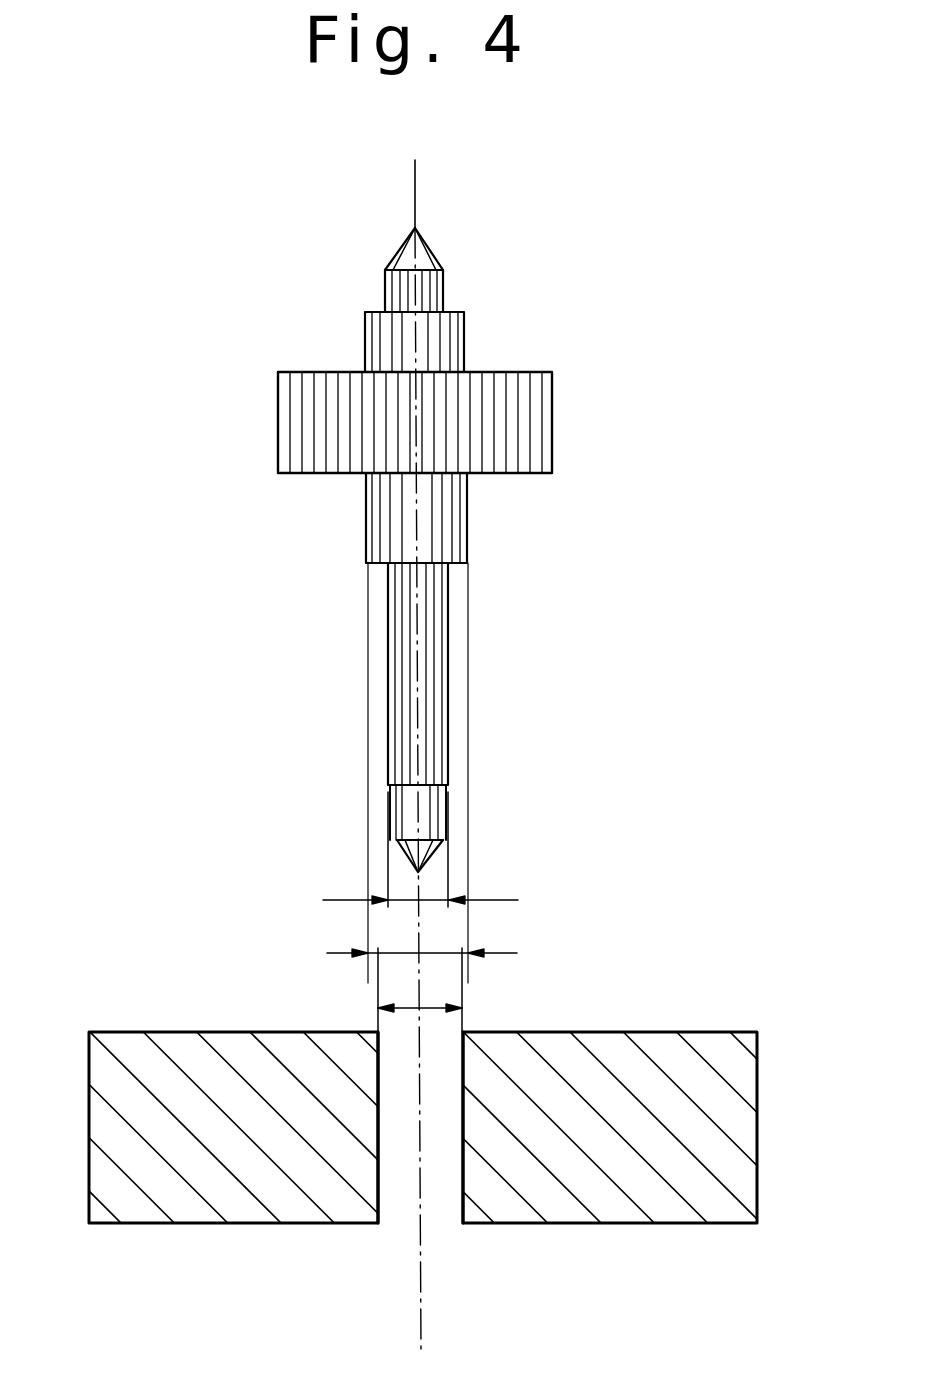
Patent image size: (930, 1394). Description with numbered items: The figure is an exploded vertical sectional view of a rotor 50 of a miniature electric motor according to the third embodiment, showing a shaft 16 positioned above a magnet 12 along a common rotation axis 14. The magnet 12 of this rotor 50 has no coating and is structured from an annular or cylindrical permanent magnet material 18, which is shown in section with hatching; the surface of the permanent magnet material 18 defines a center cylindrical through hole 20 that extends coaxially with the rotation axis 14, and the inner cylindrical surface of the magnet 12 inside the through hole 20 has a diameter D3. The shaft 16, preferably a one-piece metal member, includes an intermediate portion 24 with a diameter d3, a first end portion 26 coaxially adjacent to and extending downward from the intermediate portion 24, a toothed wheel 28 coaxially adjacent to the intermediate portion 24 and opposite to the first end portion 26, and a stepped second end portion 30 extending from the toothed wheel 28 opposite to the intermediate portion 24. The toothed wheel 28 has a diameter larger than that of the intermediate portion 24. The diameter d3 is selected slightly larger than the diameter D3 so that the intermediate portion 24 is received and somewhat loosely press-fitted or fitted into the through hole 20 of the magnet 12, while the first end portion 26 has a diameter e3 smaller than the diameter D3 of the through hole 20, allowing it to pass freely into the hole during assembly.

The magnet 12 is at (212, 1010).
The rotation axis 14 is at (421, 1333).
The shaft 16 is at (283, 515).
The permanent magnet material 18 is at (182, 1195).
The through hole 20 is at (463, 1175).
The intermediate portion 24 is at (468, 533).
The first end portion 26 is at (448, 712).
The toothed wheel 28 is at (553, 437).
The stepped second end portion 30 is at (446, 290).
The rotor 50 is at (117, 534).
The diameter of first end portion e3 is at (432, 898).
The diameter of intermediate portion d3 is at (422, 932).
The diameter of through hole D3 is at (420, 987).